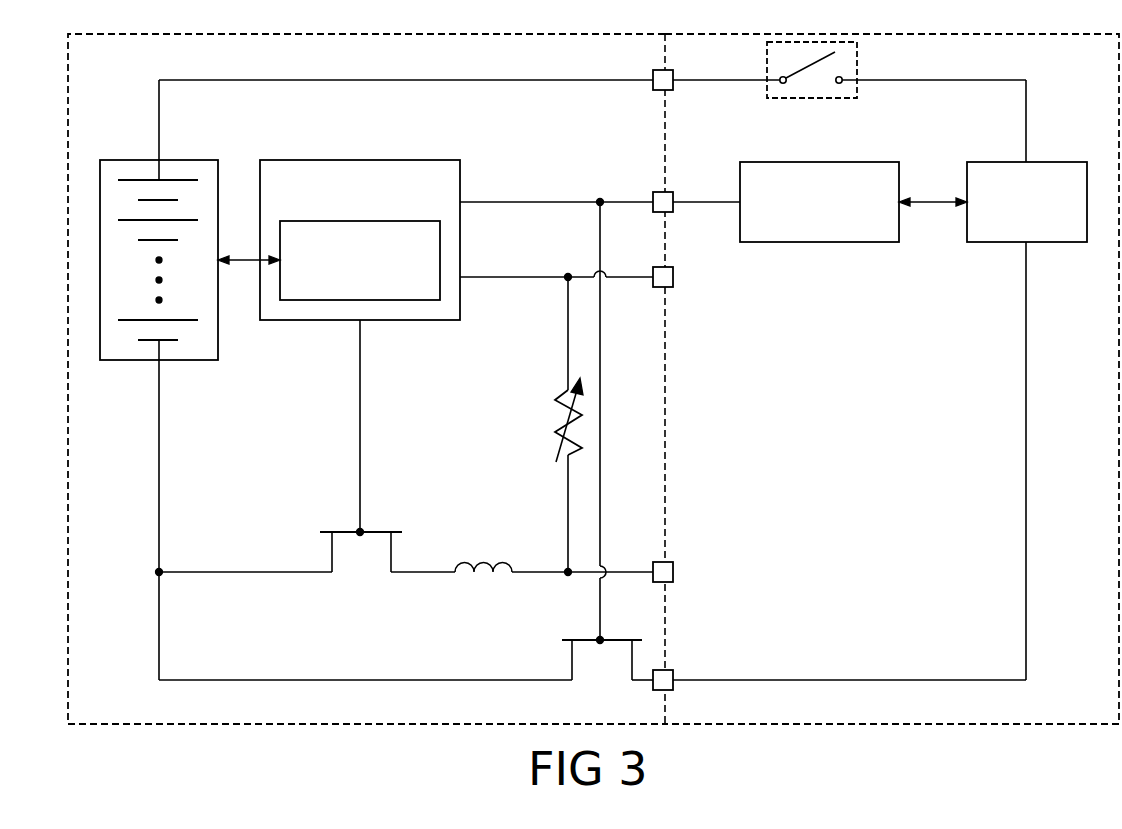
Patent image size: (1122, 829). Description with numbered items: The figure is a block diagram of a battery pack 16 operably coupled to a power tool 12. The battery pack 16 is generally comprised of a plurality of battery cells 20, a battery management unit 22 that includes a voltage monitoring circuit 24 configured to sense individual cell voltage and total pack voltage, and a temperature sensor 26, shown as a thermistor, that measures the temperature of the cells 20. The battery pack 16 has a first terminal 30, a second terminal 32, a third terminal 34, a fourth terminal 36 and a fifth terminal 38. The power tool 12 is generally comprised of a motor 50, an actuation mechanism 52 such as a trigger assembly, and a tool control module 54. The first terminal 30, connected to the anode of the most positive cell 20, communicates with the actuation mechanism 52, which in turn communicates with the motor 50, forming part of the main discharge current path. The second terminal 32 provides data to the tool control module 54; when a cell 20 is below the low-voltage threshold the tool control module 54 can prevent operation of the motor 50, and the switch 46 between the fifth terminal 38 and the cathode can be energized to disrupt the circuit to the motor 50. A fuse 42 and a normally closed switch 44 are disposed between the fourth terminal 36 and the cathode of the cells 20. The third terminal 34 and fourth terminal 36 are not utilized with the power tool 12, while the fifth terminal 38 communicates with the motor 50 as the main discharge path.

The power tool 12 is at (1056, 36).
The battery pack 16 is at (147, 36).
The battery cells 20 is at (188, 160).
The battery management unit 22 is at (387, 250).
The voltage monitoring circuit 24 is at (318, 300).
The temperature sensor 26 is at (548, 456).
The first terminal 30 is at (665, 90).
The second terminal 32 is at (668, 192).
The third terminal 34 is at (668, 287).
The fourth terminal 36 is at (668, 582).
The fifth terminal 38 is at (668, 670).
The fuse 42 is at (452, 594).
The switch 44 is at (391, 518).
The switch 46 is at (550, 643).
The motor 50 is at (1040, 162).
The actuation mechanism 52 is at (878, 107).
The tool control module 54 is at (870, 242).